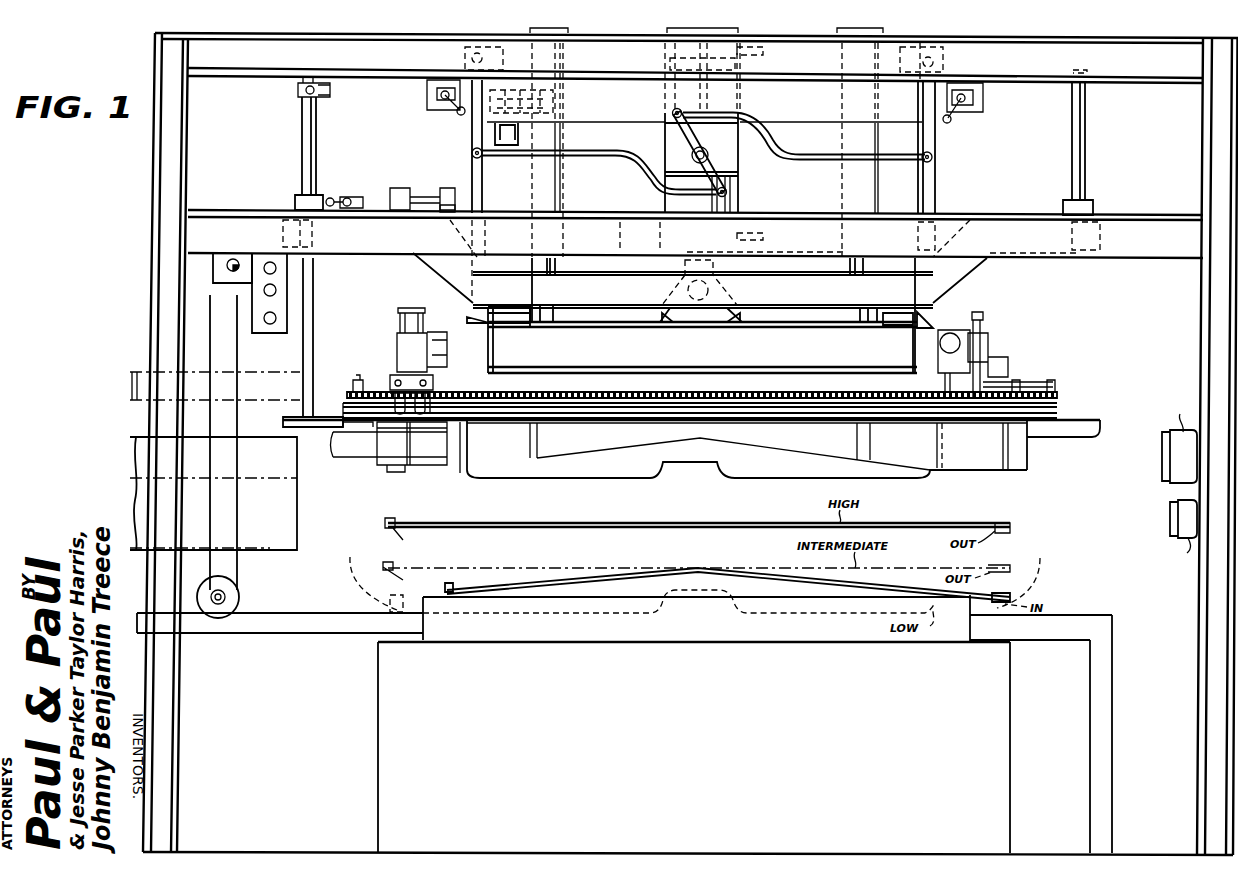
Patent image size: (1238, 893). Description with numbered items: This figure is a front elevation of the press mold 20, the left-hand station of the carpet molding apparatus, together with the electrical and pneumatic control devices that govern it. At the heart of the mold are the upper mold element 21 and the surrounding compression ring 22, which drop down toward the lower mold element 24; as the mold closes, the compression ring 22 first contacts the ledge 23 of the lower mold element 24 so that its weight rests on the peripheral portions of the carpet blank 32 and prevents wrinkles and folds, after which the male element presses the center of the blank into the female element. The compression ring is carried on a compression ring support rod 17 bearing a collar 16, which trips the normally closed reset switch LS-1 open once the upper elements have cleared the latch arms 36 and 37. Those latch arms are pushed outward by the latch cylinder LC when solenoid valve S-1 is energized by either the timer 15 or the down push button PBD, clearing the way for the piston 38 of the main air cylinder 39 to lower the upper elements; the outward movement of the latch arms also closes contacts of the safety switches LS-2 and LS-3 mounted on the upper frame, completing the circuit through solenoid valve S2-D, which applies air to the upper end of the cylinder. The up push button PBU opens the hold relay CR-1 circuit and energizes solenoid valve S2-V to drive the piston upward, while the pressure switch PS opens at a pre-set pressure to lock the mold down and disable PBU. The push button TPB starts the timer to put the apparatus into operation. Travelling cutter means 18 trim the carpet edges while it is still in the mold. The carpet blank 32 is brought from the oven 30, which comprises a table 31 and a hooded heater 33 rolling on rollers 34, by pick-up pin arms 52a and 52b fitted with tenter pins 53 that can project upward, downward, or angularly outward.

The timer 15 is at (1183, 457).
The collar 16 is at (328, 92).
The compression ring support rod 17 is at (302, 140).
The travelling cutter means 18 is at (390, 347).
The press mold 20 is at (363, 678).
The upper mold element 21 is at (497, 389).
The compression ring 22 is at (490, 440).
The ledge 23 is at (433, 597).
The lower mold element 24 is at (565, 618).
The oven 30 is at (307, 457).
The table 31 is at (320, 623).
The carpet blank 32 is at (620, 523).
The hooded heater 33 is at (270, 530).
The rollers 34 is at (240, 597).
The latch arm 36 is at (474, 173).
The latch arm 37 is at (932, 180).
The piston 38 is at (673, 233).
The air cylinder 39 is at (670, 203).
The pick-up pin arm 52a is at (393, 535).
The pick-up pin arm 52b is at (1003, 541).
The tenter pins 53 is at (394, 521).
The reset switch LS-1 is at (353, 197).
The safety switch LS-2 is at (440, 97).
The safety switch LS-3 is at (1020, 103).
The solenoid valve S-1 is at (507, 146).
The solenoid valve S2-D is at (400, 188).
The solenoid valve S2-V is at (447, 212).
The latch cylinder LC is at (553, 100).
The pressure switch PS is at (233, 258).
The up push button PBU is at (277, 266).
The down push button PBD is at (277, 290).
The push button TPB is at (270, 325).
The hold relay CR-1 is at (1176, 515).